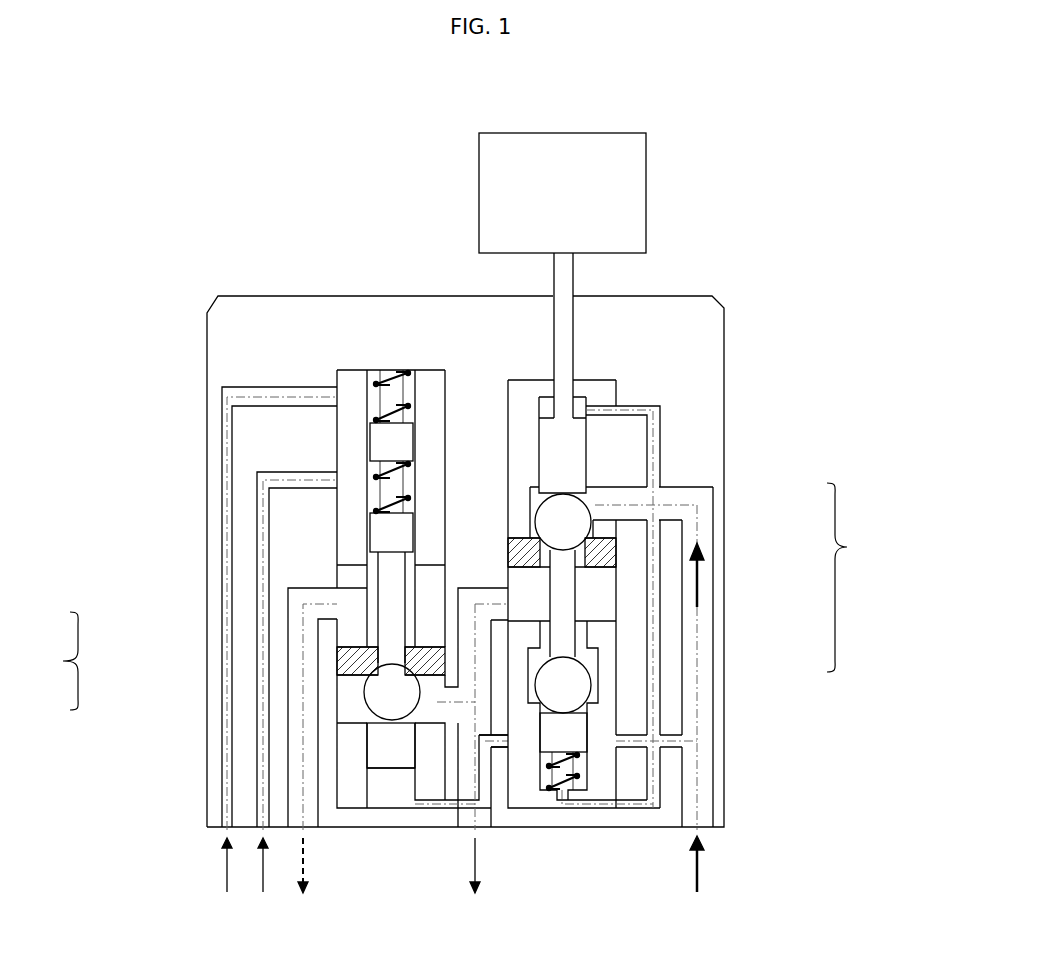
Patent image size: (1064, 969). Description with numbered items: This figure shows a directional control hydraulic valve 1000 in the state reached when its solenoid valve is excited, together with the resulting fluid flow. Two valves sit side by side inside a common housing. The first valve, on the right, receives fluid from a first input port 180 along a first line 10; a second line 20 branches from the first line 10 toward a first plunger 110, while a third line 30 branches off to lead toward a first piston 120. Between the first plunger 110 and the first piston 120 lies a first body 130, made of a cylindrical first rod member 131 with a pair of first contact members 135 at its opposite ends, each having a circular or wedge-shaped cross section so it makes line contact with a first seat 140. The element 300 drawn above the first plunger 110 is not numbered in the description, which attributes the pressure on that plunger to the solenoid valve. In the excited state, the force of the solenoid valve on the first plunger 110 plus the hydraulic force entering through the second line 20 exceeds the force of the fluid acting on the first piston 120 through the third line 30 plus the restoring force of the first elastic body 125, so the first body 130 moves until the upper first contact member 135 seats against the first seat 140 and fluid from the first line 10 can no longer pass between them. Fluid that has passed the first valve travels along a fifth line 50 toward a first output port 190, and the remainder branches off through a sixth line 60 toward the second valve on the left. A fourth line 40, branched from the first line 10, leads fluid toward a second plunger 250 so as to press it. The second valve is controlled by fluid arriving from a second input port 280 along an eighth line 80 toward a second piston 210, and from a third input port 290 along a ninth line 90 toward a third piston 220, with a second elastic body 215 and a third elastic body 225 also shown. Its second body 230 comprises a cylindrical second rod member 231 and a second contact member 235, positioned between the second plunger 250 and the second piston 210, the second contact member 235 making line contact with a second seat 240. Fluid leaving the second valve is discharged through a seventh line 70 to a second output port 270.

The directional control hydraulic valve 1000 is at (237, 162).
The first line 10 is at (713, 706).
The second line 20 is at (658, 458).
The third line 30 is at (578, 681).
The fourth line 40 is at (667, 745).
The fifth line 50 is at (468, 730).
The sixth line 60 is at (450, 713).
The seventh line 70 is at (293, 677).
The eighth line 80 is at (262, 598).
The ninth line 90 is at (225, 560).
The first plunger 110 is at (573, 427).
The first piston 120 is at (543, 723).
The first elastic body 125 is at (578, 777).
The first body 130 is at (699, 594).
The first rod member 131 is at (563, 605).
The first contact member 135 is at (570, 510).
The first seat 140 is at (608, 552).
The first input port 180 is at (681, 690).
The first output port 190 is at (495, 884).
The second piston 210 is at (383, 527).
The second elastic body 215 is at (387, 496).
The third piston 220 is at (375, 449).
The third elastic body 225 is at (372, 370).
The second body 230 is at (264, 600).
The second rod member 231 is at (392, 623).
The second contact member 235 is at (383, 695).
The second seat 240 is at (343, 655).
The second plunger 250 is at (373, 742).
The second output port 270 is at (315, 828).
The second input port 280 is at (263, 828).
The third input port 290 is at (222, 828).
The actuator 300 is at (612, 200).